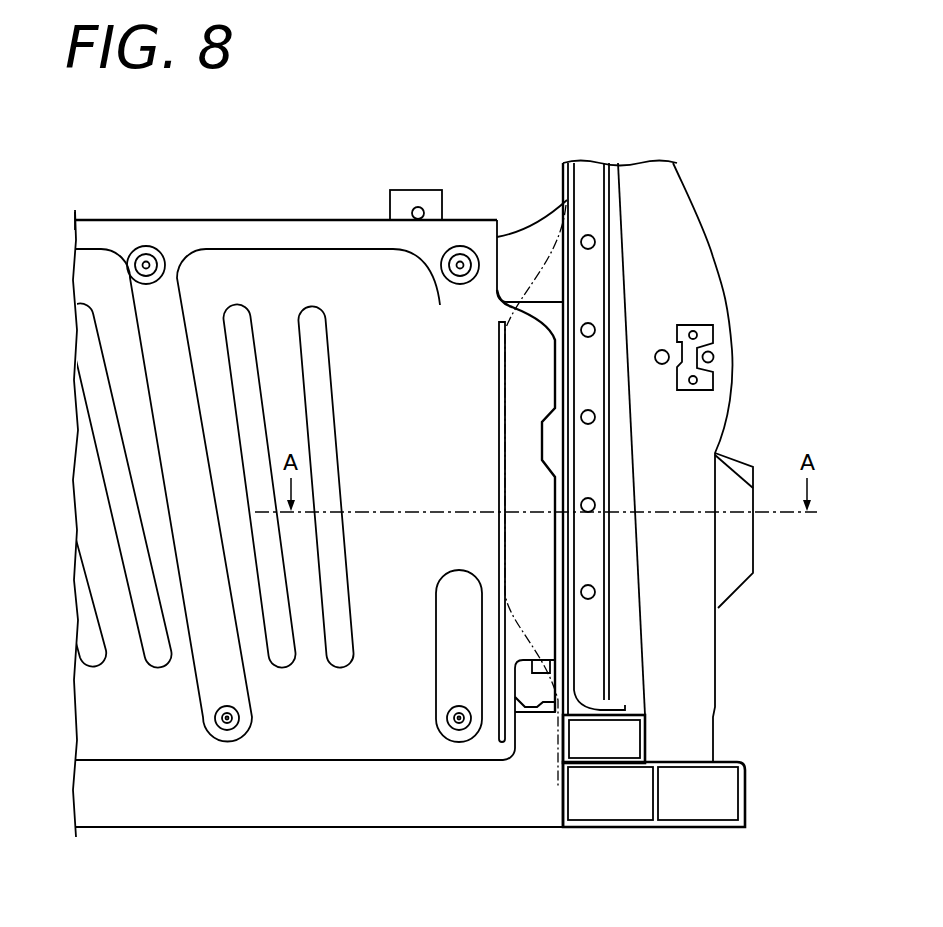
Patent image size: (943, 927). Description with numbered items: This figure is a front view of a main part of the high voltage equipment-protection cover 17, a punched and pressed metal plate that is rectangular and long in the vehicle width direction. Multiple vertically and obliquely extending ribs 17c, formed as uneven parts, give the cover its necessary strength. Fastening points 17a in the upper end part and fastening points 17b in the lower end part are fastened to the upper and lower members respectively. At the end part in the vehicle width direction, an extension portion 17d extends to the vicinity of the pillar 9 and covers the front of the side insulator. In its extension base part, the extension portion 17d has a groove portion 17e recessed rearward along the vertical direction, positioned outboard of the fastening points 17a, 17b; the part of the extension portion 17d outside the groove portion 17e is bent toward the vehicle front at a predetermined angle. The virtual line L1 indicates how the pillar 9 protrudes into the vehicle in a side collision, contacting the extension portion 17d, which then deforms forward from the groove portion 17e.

The pillar 9 is at (615, 258).
The high voltage equipment-protection cover 17 is at (220, 220).
The fastening point 17a is at (146, 262).
The fastening point 17b is at (227, 720).
The rib 17c is at (310, 304).
The extension portion 17d is at (532, 482).
The groove portion 17e is at (499, 640).
The virtual line L1 is at (512, 620).